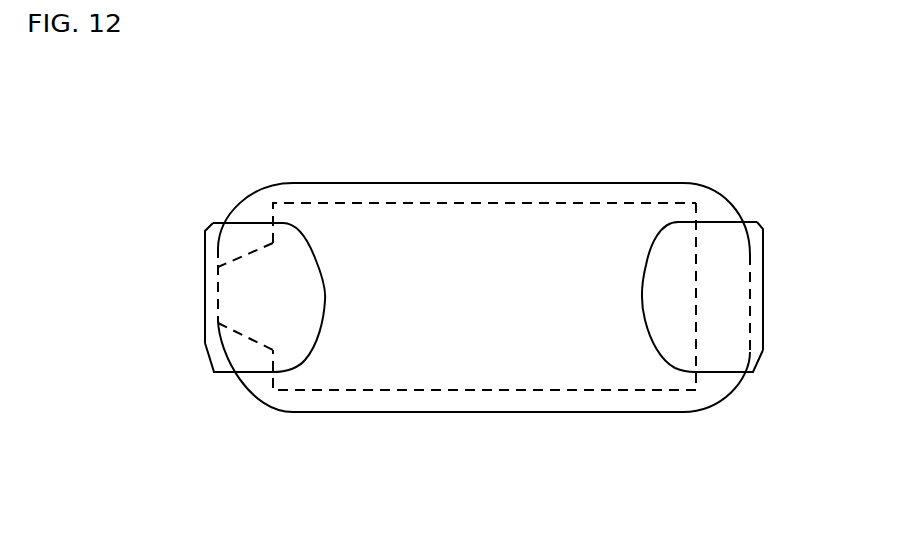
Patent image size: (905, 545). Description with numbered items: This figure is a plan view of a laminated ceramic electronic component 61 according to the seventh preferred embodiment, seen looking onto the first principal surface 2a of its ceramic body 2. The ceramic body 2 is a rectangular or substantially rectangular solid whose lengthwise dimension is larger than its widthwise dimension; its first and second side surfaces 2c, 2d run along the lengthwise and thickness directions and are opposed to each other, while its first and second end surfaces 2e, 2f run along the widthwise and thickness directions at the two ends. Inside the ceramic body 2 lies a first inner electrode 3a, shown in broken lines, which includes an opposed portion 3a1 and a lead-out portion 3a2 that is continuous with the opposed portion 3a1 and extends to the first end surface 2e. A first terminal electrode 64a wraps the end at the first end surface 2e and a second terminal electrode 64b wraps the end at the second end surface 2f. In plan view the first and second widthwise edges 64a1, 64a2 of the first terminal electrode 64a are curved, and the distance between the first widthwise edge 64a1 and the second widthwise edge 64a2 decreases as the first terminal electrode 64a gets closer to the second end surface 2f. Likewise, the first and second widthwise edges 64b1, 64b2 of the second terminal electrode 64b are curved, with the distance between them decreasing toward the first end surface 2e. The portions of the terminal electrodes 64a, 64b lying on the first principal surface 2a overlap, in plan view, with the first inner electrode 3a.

The laminated ceramic electronic component 61 is at (219, 157).
The ceramic body 2 is at (408, 177).
The first principal surface 2a is at (610, 190).
The first side surface 2c is at (672, 412).
The second side surface 2d is at (540, 183).
The first end surface 2e is at (214, 300).
The second end surface 2f is at (750, 298).
The first inner electrode 3a is at (491, 196).
The opposed portion 3a1 is at (430, 248).
The lead-out portion 3a2 is at (255, 263).
The first terminal electrode 64a is at (221, 380).
The first widthwise edge 64a1 is at (263, 373).
The second widthwise edge 64a2 is at (287, 227).
The second terminal electrode 64b is at (772, 314).
The first widthwise edge 64b1 is at (740, 368).
The second widthwise edge 64b2 is at (727, 223).